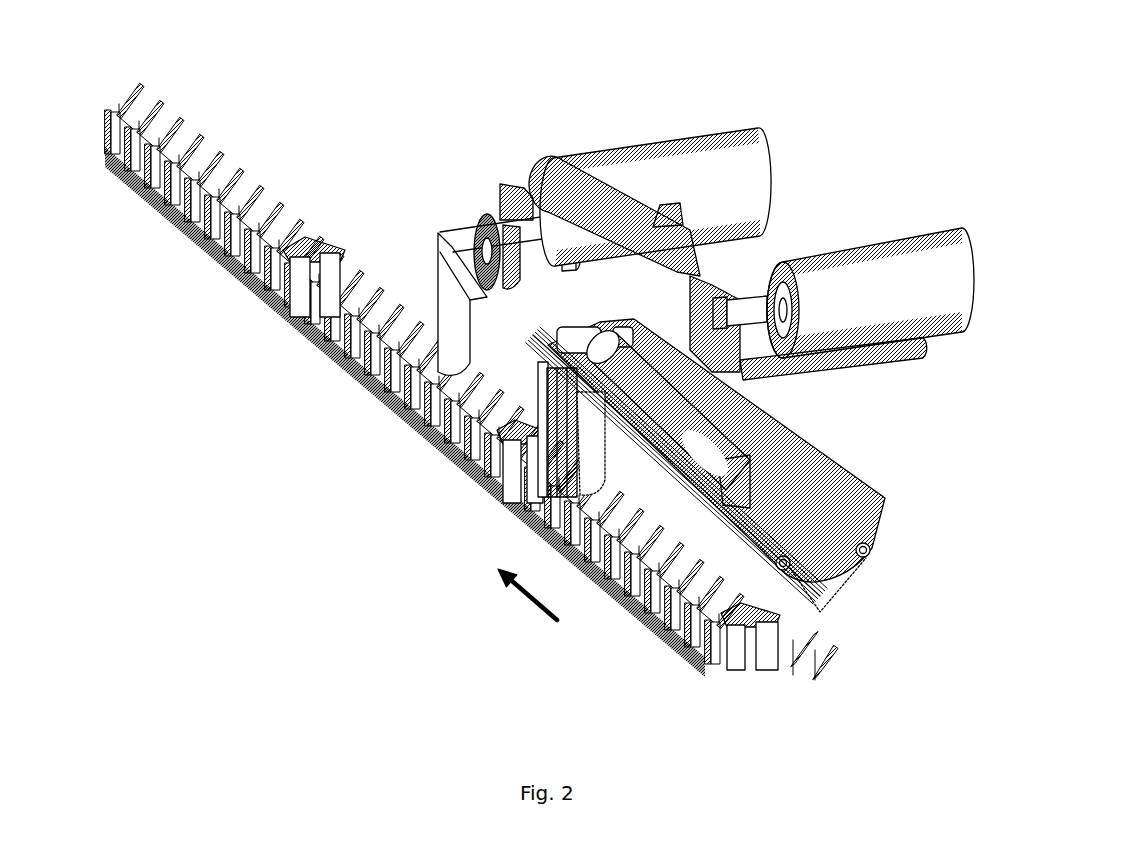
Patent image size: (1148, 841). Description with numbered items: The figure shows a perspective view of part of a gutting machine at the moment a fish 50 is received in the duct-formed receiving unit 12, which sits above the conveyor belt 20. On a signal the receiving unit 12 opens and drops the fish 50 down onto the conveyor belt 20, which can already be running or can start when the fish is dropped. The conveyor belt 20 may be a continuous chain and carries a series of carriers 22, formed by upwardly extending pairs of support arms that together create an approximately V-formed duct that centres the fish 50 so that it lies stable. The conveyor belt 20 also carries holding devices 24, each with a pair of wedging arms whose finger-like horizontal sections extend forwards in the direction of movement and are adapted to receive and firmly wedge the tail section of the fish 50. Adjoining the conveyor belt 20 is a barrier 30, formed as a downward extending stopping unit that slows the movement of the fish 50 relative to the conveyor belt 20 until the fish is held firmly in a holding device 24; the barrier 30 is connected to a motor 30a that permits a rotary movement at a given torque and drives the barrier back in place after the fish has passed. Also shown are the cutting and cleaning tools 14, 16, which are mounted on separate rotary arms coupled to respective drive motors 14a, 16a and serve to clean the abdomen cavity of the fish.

The receiving unit 12 is at (800, 477).
The cutting and cleaning tool 14 is at (483, 227).
The drive motor 14a is at (877, 273).
The cutting and cleaning tool 16 is at (455, 273).
The drive motor 16a is at (687, 177).
The conveyor belt 20 is at (440, 443).
The carrier 22 is at (237, 203).
The holding device 24 is at (310, 267).
The barrier 30 is at (573, 440).
The motor 30a is at (890, 348).
The fish 50 is at (670, 417).